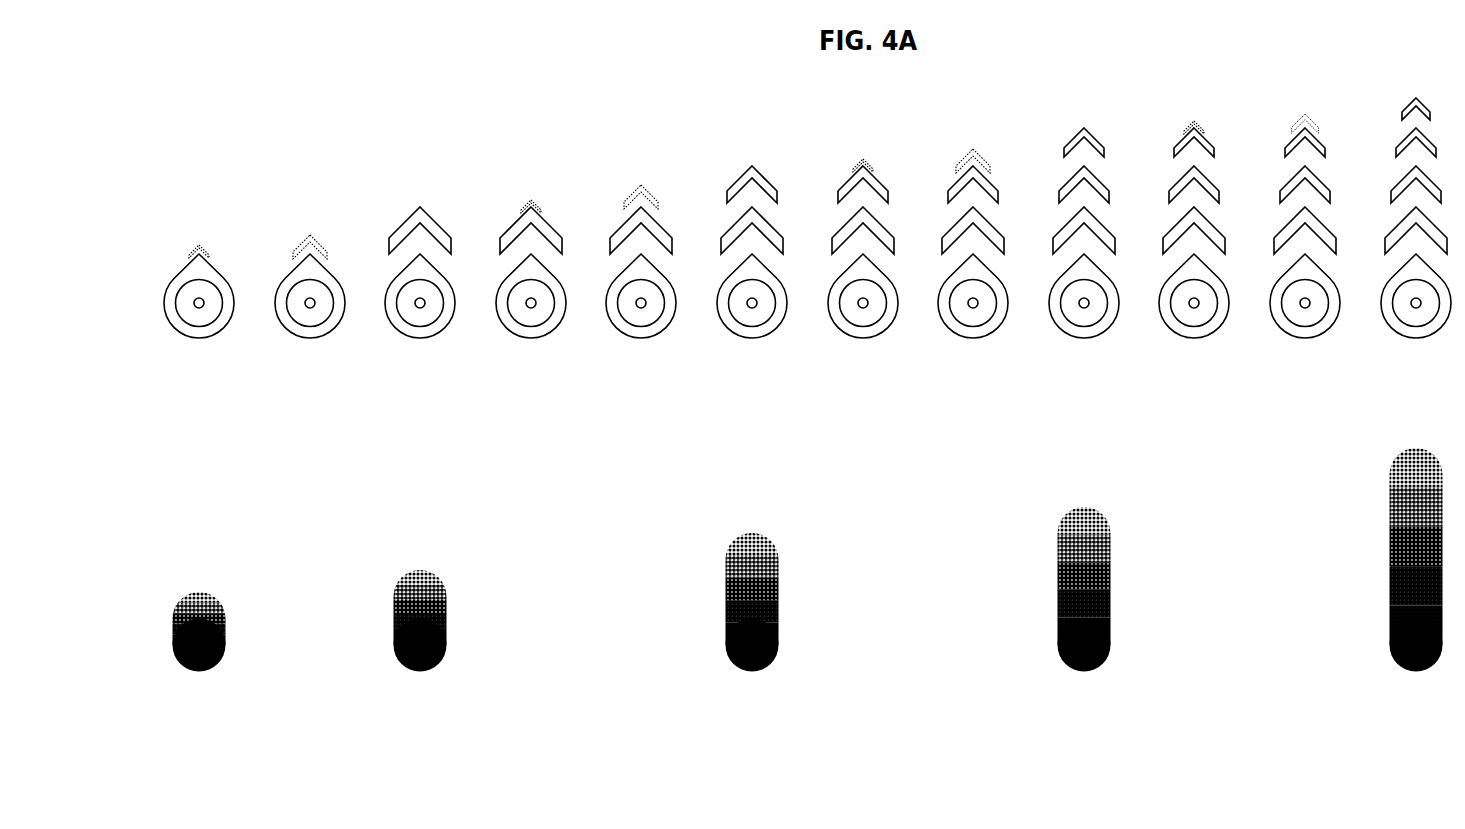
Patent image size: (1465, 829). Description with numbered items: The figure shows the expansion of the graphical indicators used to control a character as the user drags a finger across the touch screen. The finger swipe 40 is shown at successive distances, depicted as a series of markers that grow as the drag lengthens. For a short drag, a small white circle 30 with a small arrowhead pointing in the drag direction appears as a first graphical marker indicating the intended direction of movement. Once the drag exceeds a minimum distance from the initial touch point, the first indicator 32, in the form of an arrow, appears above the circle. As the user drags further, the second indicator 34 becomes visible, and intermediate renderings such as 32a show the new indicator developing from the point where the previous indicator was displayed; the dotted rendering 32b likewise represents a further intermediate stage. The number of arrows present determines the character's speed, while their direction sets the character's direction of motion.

The small white circle 30 is at (170, 322).
The first indicator 32 is at (420, 207).
The intermediate rendering 32a is at (531, 200).
The large dotted chevron 32b is at (641, 184).
The second indicator 34 is at (752, 166).
The finger swipe 40 is at (752, 672).